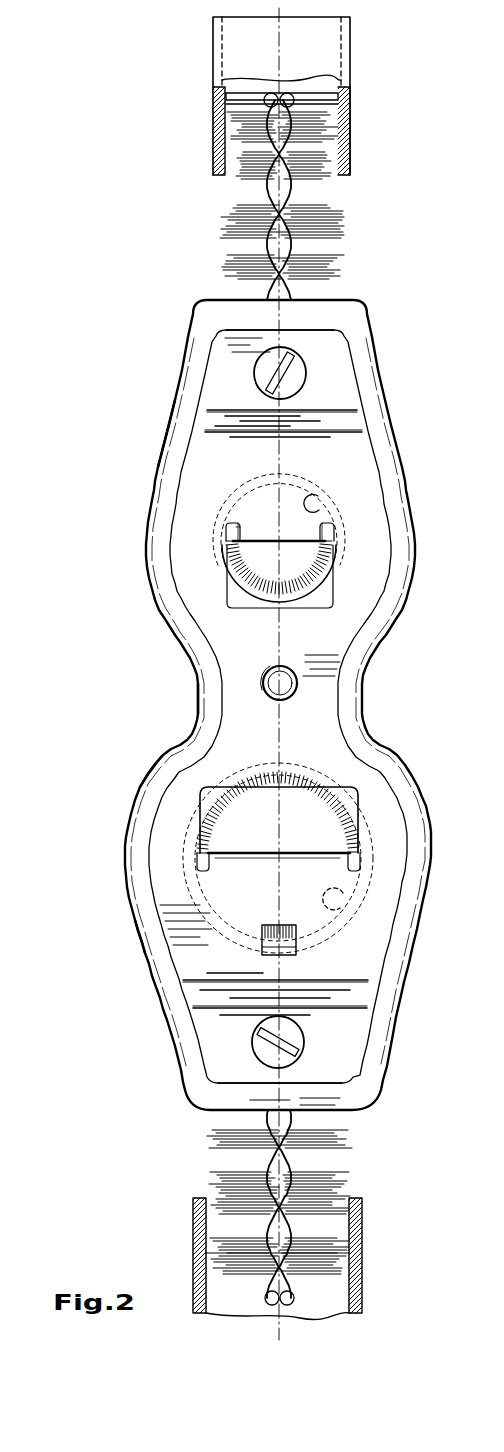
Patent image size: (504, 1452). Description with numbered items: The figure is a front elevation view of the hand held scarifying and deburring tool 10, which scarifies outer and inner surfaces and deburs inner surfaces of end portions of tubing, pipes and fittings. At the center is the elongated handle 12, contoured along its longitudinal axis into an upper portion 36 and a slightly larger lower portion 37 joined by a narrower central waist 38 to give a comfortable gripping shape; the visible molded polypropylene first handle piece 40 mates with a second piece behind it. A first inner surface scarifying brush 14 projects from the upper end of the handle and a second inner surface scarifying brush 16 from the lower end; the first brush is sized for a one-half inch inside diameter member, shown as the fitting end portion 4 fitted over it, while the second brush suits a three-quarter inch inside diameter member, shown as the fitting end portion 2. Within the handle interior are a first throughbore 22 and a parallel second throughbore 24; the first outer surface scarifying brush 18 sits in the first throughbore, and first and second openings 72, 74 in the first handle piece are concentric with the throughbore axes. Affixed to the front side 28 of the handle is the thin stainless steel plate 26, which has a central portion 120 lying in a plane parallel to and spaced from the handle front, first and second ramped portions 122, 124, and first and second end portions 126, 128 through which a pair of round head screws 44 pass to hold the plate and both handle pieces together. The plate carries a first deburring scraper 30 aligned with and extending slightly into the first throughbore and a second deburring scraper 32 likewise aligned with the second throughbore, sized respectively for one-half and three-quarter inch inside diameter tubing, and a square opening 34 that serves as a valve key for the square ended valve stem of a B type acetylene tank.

The three-quarter inch ID fitting end portion 2 is at (365, 1282).
The one-half inch ID fitting end portion 4 is at (352, 117).
The scarifying and deburring tool 10 is at (279, 675).
The elongated handle 12 is at (148, 722).
The first inner surface scarifying brush 14 is at (205, 192).
The second inner surface scarifying brush 16 is at (193, 1178).
The first outer surface scarifying brush 18 is at (503, 484).
The first throughbore 22 is at (267, 560).
The second throughbore 24 is at (345, 823).
The plate 26 is at (295, 637).
The front side of the handle 28 is at (167, 777).
The first deburring scraper 30 is at (297, 547).
The second deburring scraper 32 is at (357, 842).
The square opening 34 is at (285, 958).
The upper portion of the handle 36 is at (160, 531).
The lower portion of the handle 37 is at (157, 930).
The central waist 38 is at (217, 675).
The first handle piece 40 is at (398, 387).
The screws 44 is at (300, 378).
The first opening in the first handle piece 72 is at (322, 500).
The second opening in the first handle piece 74 is at (336, 892).
The central portion of the plate 120 is at (234, 471).
The first ramped portion 122 is at (198, 417).
The second ramped portion 124 is at (210, 997).
The first end portion of the plate 126 is at (217, 361).
The second end portion of the plate 128 is at (227, 1050).